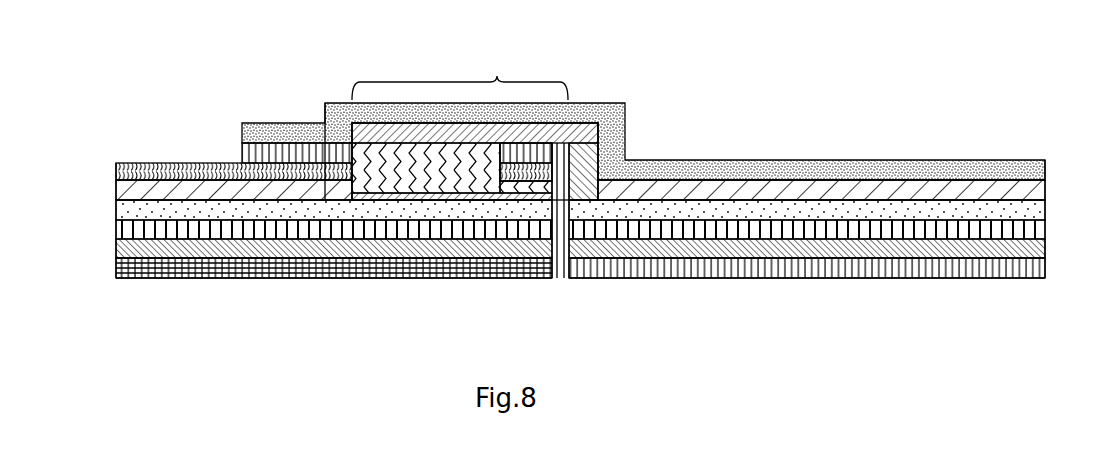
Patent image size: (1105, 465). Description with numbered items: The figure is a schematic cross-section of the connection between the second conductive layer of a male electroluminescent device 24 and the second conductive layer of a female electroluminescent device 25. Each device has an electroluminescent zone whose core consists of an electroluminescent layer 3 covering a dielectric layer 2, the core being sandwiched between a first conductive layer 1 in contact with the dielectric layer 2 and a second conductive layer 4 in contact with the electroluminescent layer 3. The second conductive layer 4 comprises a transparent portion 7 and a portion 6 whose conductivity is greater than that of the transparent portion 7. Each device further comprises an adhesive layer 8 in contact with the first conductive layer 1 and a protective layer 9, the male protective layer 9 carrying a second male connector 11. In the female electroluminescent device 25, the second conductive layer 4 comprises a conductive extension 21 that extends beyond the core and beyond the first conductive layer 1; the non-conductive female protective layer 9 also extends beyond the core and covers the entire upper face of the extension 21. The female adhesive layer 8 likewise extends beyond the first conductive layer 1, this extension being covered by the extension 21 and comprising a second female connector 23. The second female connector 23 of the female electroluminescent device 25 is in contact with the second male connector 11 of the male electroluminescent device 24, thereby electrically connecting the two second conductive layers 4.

The first conductive layer 1 is at (116, 252).
The dielectric layer 2 is at (116, 230).
The electroluminescent layer 3 is at (116, 210).
The second conductive layer 4 is at (116, 192).
The portion of greater conductivity 6 is at (242, 124).
The transparent portion 7 is at (167, 182).
The adhesive layer 8 is at (116, 276).
The protective layer 9 is at (116, 171).
The second male connector 11 is at (350, 194).
The extension 21 is at (460, 75).
The second female connector 23 is at (483, 150).
The male electroluminescent device 24 is at (324, 280).
The female electroluminescent device 25 is at (955, 280).